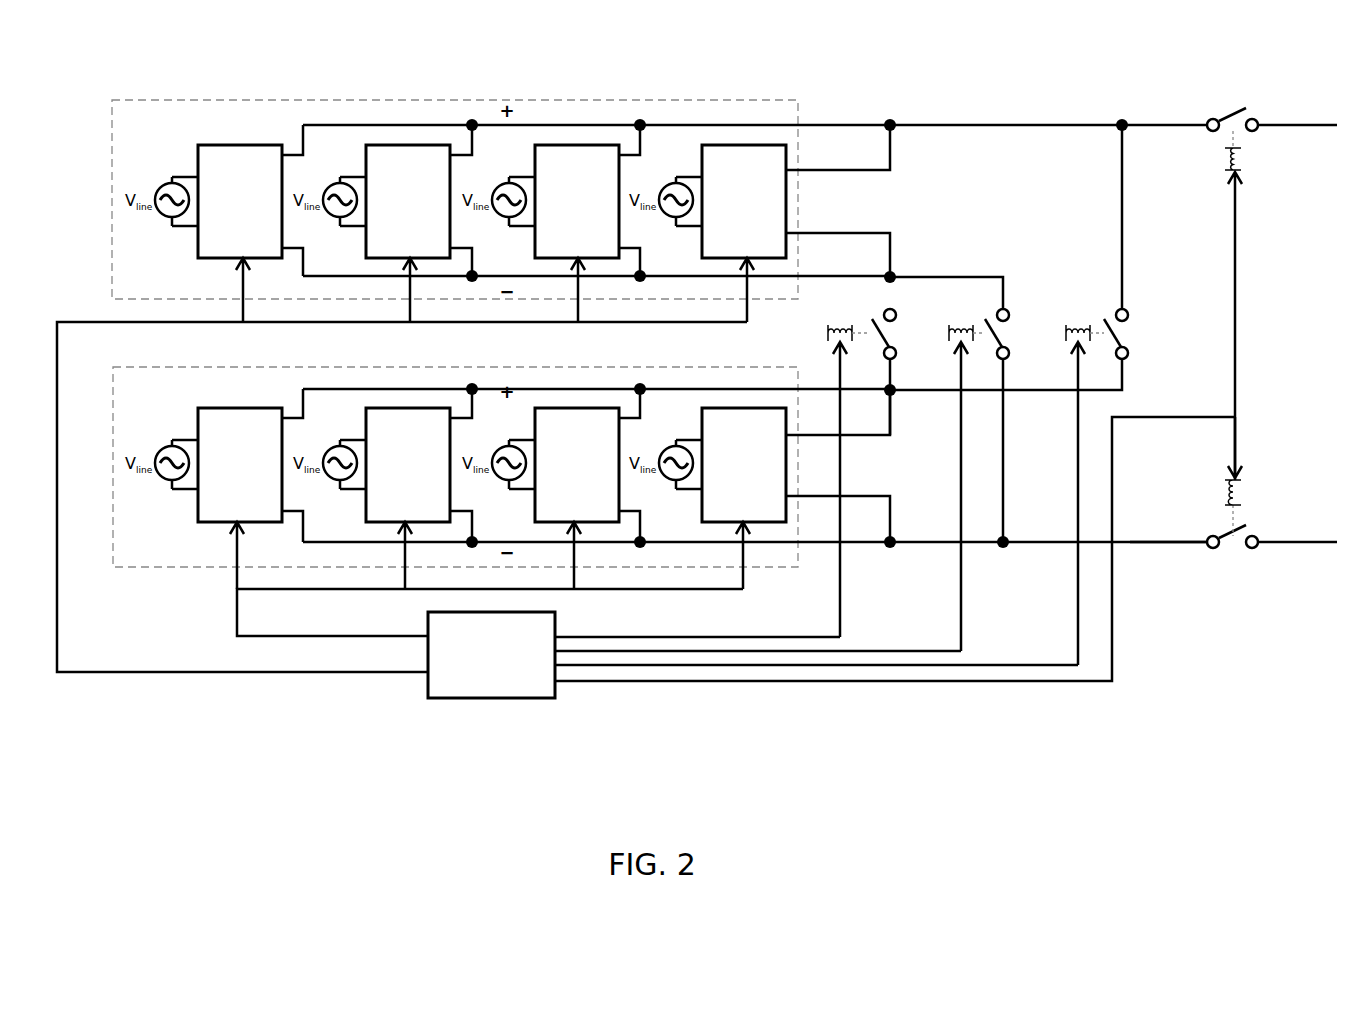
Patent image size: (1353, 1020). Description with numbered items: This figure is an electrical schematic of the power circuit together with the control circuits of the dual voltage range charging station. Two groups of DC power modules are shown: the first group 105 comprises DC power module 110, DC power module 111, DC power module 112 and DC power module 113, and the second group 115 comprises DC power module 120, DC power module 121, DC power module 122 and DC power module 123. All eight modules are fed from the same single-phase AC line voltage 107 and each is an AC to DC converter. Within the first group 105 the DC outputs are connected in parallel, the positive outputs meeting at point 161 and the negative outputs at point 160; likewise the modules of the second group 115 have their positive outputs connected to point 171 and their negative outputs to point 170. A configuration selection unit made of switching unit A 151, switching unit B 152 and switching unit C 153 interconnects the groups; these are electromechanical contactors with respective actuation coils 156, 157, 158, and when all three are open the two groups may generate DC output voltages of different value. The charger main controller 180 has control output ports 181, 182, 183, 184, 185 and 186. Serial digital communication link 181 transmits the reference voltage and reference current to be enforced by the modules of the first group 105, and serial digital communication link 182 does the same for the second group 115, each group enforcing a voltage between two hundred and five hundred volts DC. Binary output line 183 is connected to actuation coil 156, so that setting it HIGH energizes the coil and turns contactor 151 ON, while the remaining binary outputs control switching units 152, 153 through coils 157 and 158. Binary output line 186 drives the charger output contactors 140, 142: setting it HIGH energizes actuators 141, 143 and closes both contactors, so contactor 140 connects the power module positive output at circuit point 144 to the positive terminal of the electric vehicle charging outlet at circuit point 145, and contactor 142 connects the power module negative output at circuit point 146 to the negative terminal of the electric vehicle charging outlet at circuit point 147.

The first group of at least one DC power module 105 is at (199, 100).
The single-phase AC line voltage 107 is at (164, 186).
The DC power module 110 is at (198, 253).
The DC power module 111 is at (366, 253).
The DC power module 112 is at (535, 253).
The DC power module 113 is at (702, 253).
The second group of at least one DC power module 115 is at (205, 567).
The DC power module 120 is at (198, 516).
The DC power module 121 is at (366, 516).
The DC power module 122 is at (535, 516).
The DC power module 123 is at (702, 516).
The charger output contactor 140 is at (1236, 109).
The actuator 141 is at (1226, 166).
The charger output contactor 142 is at (1230, 550).
The actuator 143 is at (1226, 498).
The power module positive output PM+ 144 is at (1119, 121).
The positive terminal of the electric vehicle charging outlet EV+ 145 is at (1332, 124).
The power module negative output PM− 146 is at (1143, 545).
The negative terminal of the electric vehicle charging outlet EV− 147 is at (1322, 545).
The switching unit A 151 is at (895, 333).
The switching unit B 152 is at (1008, 333).
The switching unit C 153 is at (1128, 335).
The actuation coil 156 is at (826, 333).
The actuation coil 157 is at (949, 322).
The actuation coil 158 is at (1067, 322).
The negative connection point 160 is at (888, 274).
The positive connection point 161 is at (886, 121).
The negative connection point 170 is at (895, 538).
The positive connection point 171 is at (893, 393).
The charger main controller 180 is at (428, 692).
The serial digital communication link 181 is at (200, 675).
The serial digital communication link 182 is at (234, 635).
The binary output line 183 is at (839, 620).
The control output port 184 is at (959, 633).
The control output port 185 is at (1076, 646).
The binary output line 186 is at (722, 684).